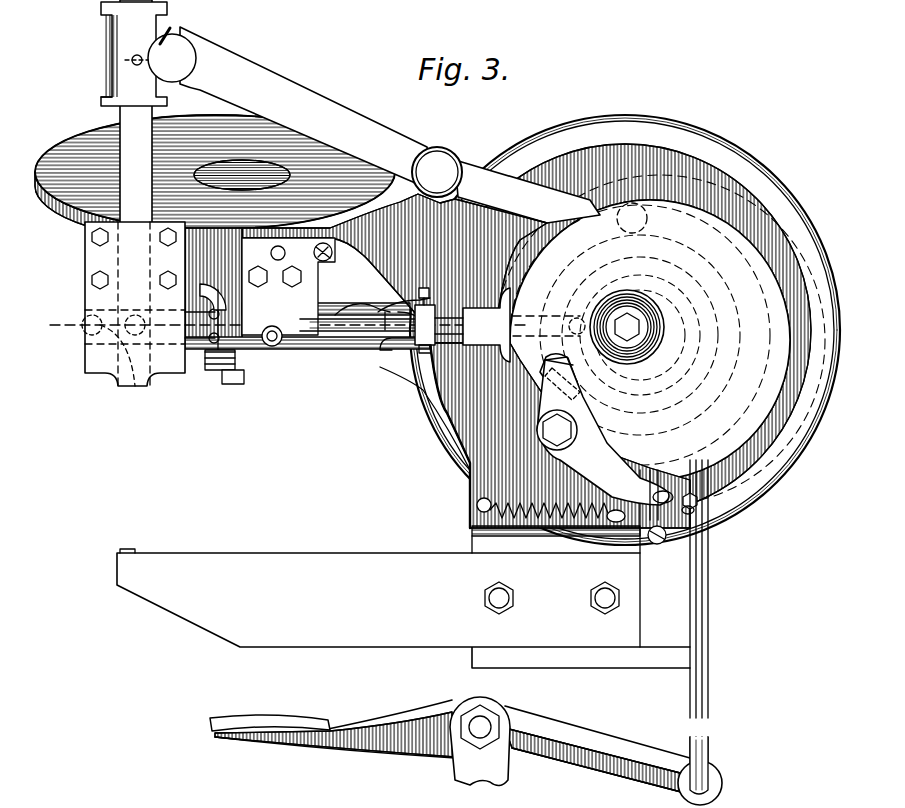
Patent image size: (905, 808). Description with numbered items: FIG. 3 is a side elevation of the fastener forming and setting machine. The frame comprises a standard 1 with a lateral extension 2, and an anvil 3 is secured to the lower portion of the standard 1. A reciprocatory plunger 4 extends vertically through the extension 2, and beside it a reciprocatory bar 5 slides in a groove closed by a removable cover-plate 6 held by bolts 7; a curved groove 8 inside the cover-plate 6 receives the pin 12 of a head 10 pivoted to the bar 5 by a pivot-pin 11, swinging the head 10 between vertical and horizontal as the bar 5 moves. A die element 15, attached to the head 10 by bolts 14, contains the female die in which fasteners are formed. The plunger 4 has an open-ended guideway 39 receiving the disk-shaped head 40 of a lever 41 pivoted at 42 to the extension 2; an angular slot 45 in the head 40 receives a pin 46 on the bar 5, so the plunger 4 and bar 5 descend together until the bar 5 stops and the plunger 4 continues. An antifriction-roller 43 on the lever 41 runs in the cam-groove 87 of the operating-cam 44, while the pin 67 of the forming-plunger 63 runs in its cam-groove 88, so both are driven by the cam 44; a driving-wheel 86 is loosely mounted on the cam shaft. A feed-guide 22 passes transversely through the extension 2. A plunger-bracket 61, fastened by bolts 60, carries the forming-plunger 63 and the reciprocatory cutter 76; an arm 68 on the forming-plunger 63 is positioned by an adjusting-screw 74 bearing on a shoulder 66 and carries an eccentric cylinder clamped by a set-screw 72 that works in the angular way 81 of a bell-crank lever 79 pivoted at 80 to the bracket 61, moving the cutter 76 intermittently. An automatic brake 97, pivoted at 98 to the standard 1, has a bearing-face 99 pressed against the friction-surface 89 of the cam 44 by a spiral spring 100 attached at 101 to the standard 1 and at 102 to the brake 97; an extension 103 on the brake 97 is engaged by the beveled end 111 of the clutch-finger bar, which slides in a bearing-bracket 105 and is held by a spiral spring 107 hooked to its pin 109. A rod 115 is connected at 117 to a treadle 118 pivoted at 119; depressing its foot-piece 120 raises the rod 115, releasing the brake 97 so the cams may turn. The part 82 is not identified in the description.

The standard 1 is at (455, 440).
The lateral extension 2 is at (232, 238).
The anvil 3 is at (300, 557).
The reciprocatory plunger 4 is at (101, 100).
The reciprocatory bar 5 is at (122, 116).
The cover-plate 6 is at (90, 318).
The bolts 7 is at (168, 245).
The curved groove 8 is at (136, 388).
The head 10 is at (195, 326).
The pivot-pin 11 is at (136, 314).
The pin 12 is at (88, 332).
The bolts 14 is at (214, 372).
The die element 15 is at (238, 384).
The feed-guide 22 is at (228, 310).
The guideway 39 is at (105, 28).
The disk-shaped head 40 is at (178, 52).
The lever 41 is at (312, 68).
The pivot 42 is at (446, 150).
The antifriction-roller 43 is at (645, 232).
The operating-cam 44 is at (780, 430).
The angular slot 45 is at (172, 36).
The pin 46 is at (137, 66).
The bolts 60 is at (268, 280).
The plunger-bracket 61 is at (280, 350).
The forming-plunger 63 is at (400, 340).
The shoulder 66 is at (500, 322).
The pin 67 is at (572, 316).
The arm 68 is at (425, 342).
The set-screw 72 is at (430, 292).
The adjusting-screw 74 is at (380, 306).
The reciprocatory cutter 76 is at (335, 318).
The bell-crank lever 79 is at (362, 297).
The pivot screw 80 is at (330, 243).
The angular way 81 is at (380, 345).
The table disc 82 is at (72, 148).
The driving-wheel 86 is at (718, 152).
The cam-groove 87 is at (775, 298).
The cam-groove 88 is at (682, 345).
The friction-surface 89 is at (560, 355).
The automatic brake 97 is at (615, 440).
The pivot 98 is at (578, 428).
The bearing-face 99 is at (580, 388).
The spiral spring 100 is at (548, 518).
The spring attachment 101 is at (480, 512).
The spring attachment 102 is at (615, 522).
The extension 103 is at (665, 490).
The bearing-bracket 105 is at (700, 500).
The spiral spring 107 is at (659, 544).
The pin 109 is at (694, 512).
The beveled end 111 is at (652, 494).
The rod 115 is at (710, 580).
The connection 117 is at (712, 782).
The treadle 118 is at (365, 698).
The pivot 119 is at (485, 722).
The foot-piece 120 is at (270, 710).